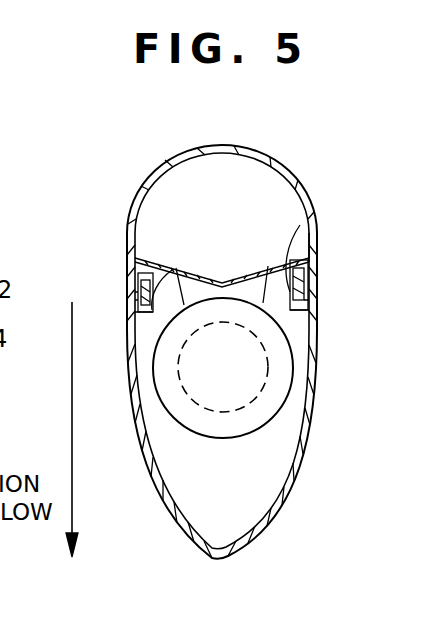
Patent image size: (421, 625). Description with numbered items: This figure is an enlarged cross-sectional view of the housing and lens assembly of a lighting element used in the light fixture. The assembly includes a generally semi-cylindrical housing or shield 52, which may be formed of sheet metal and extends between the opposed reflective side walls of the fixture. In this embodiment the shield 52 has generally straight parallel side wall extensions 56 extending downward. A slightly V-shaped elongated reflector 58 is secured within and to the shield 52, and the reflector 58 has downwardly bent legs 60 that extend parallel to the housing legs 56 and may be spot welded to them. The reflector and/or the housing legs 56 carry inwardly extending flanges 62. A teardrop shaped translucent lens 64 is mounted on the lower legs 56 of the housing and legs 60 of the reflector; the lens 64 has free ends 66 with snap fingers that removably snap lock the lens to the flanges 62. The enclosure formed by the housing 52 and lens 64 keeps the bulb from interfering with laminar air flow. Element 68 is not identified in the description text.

The semi-cylindrical housing or shield 52 is at (166, 162).
The side wall extensions 56 is at (125, 232).
The elongated reflector 58 is at (308, 228).
The downwardly bent legs 60 is at (126, 273).
The inwardly extending flanges 62 is at (302, 308).
The teardrop shaped translucent lens 64 is at (297, 492).
The free ends 66 is at (171, 262).
The membrane 68 is at (208, 297).